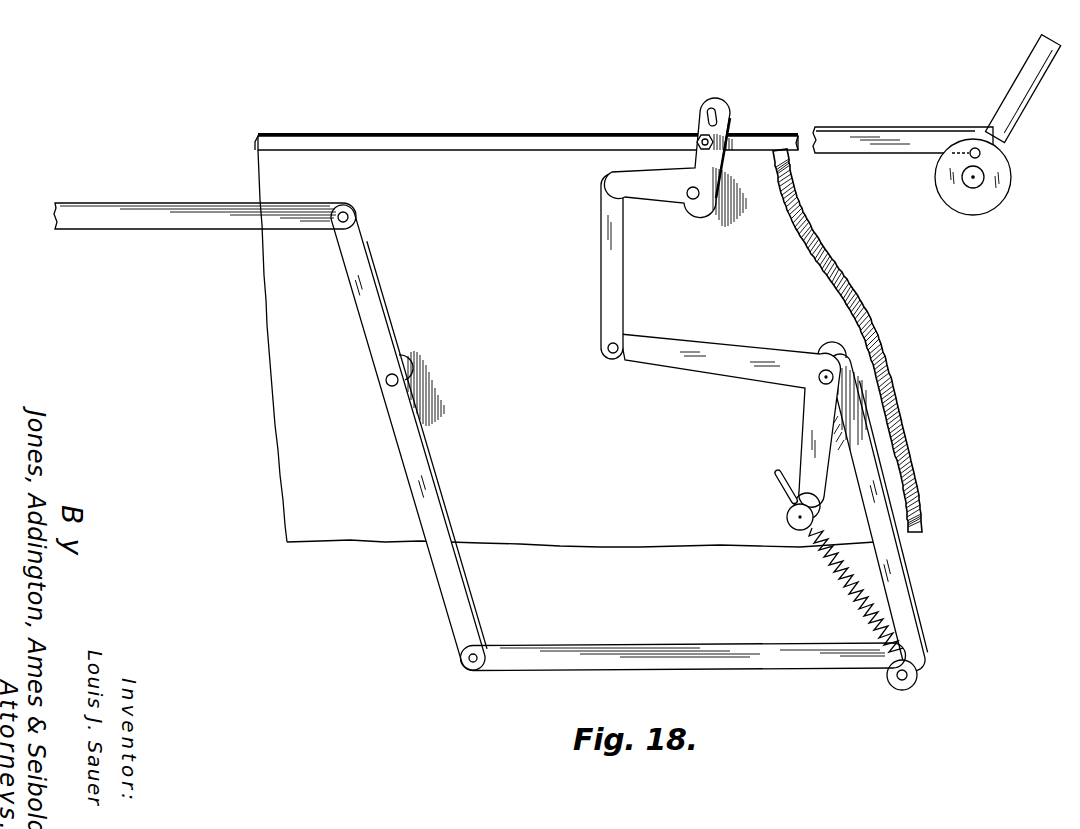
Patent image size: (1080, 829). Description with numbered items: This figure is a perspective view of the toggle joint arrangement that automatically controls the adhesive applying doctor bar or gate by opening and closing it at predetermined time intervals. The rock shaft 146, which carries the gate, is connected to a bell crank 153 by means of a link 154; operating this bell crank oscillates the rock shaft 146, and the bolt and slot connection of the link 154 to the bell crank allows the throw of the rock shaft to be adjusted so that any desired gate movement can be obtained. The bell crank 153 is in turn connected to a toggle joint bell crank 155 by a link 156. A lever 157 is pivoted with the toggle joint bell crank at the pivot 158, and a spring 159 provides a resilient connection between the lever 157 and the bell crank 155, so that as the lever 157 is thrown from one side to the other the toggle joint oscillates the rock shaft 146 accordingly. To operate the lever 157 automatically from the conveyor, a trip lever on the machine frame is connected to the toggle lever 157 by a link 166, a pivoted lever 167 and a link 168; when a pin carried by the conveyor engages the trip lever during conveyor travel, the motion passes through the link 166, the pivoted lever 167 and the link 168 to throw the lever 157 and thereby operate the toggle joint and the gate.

The rock shaft 146 is at (1023, 77).
The bell crank 153 is at (690, 168).
The link 154 is at (920, 118).
The toggle joint bell crank 155 is at (757, 355).
The link 156 is at (626, 296).
The lever 157 is at (898, 600).
The pivot 158 is at (832, 376).
The spring 159 is at (848, 588).
The link 166 is at (102, 197).
The pivoted lever 167 is at (414, 471).
The link 168 is at (703, 634).